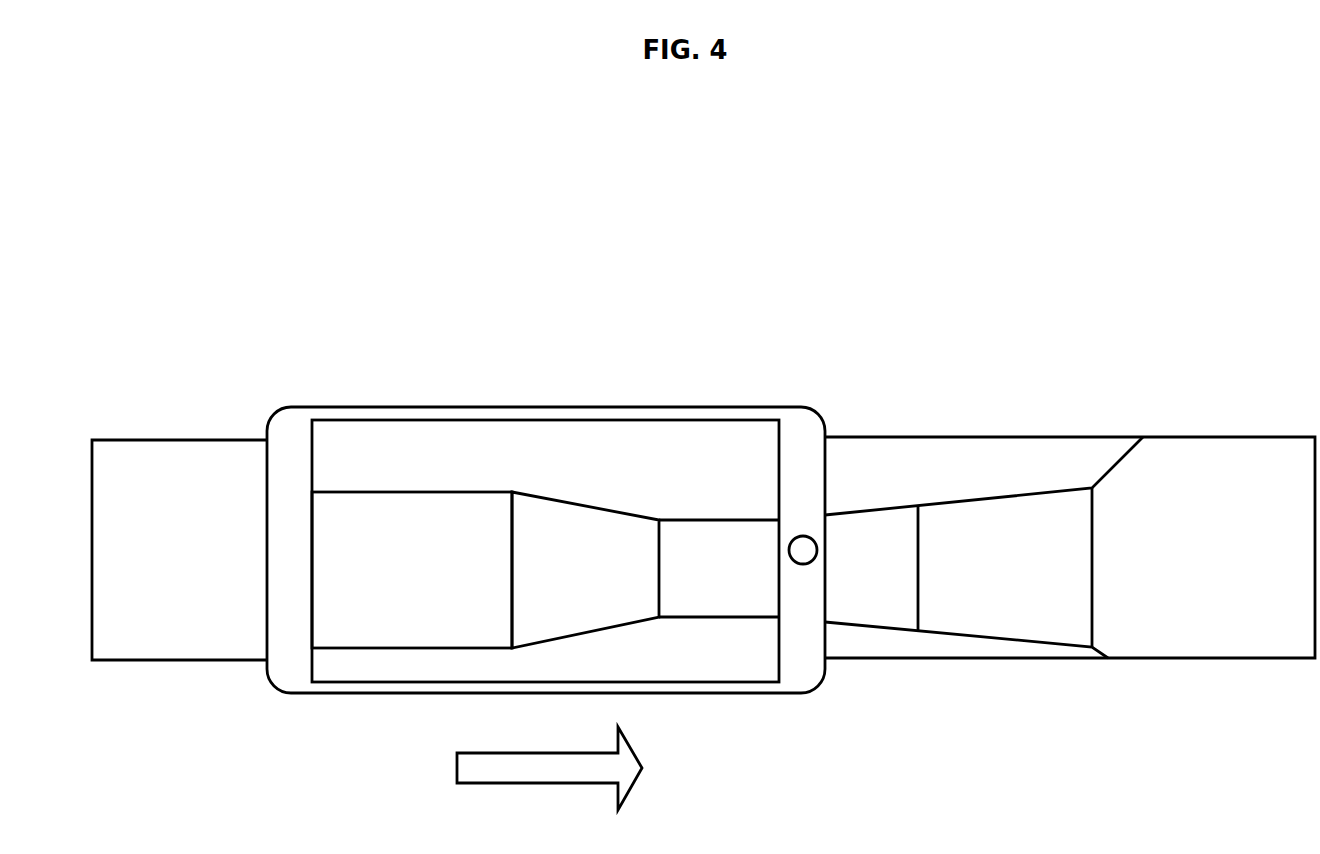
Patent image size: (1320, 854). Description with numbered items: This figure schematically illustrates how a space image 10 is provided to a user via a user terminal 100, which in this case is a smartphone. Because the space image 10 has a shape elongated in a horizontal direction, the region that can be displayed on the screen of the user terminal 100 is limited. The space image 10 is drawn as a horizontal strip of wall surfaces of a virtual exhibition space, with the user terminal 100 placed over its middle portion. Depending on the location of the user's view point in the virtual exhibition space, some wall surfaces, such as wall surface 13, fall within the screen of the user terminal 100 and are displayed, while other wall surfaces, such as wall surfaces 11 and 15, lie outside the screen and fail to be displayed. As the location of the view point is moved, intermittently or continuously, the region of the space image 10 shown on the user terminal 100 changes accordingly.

The space image 10 is at (1088, 393).
The wall surface 11 is at (161, 455).
The wall surface 13 is at (560, 510).
The wall surface 15 is at (886, 522).
The user terminal 100 is at (730, 407).